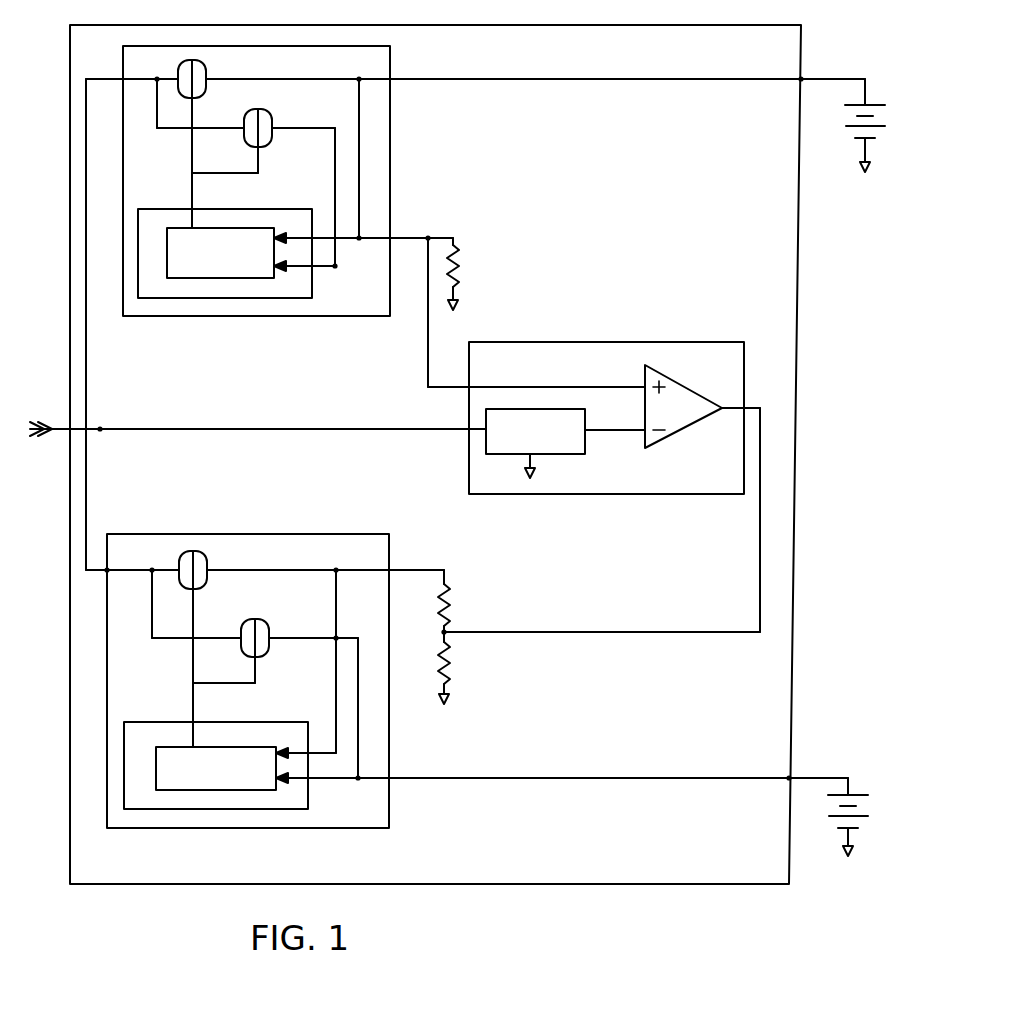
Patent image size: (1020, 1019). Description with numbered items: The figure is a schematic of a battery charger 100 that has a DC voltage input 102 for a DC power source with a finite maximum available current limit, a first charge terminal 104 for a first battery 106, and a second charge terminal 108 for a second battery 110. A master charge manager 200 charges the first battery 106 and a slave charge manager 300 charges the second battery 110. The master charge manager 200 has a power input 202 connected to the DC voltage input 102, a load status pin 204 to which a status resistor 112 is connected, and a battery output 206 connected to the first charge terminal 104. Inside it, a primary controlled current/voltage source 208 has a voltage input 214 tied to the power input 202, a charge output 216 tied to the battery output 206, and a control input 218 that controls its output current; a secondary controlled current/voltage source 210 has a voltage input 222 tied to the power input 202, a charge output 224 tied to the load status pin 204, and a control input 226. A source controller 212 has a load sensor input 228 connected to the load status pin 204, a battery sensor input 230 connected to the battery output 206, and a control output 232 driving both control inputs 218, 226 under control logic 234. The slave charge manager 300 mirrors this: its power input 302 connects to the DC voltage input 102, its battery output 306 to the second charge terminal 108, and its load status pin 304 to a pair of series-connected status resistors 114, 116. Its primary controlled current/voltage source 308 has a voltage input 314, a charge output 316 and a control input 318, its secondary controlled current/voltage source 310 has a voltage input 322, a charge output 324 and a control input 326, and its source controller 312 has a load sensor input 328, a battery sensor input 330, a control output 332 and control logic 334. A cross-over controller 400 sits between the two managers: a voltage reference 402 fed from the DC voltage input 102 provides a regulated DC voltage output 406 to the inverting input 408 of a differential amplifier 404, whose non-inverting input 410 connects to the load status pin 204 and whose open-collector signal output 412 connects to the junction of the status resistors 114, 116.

The battery charger 100 is at (505, 884).
The DC voltage input 102 is at (52, 423).
The first charge terminal 104 is at (803, 81).
The first battery 106 is at (875, 92).
The second charge terminal 108 is at (791, 776).
The second battery 110 is at (859, 782).
The status resistor 112 is at (462, 266).
The status resistor 114 is at (456, 594).
The status resistor 116 is at (457, 666).
The master charge manager 200 is at (390, 152).
The power input 202 is at (124, 78).
The load status pin 204 is at (393, 237).
The battery output 206 is at (395, 76).
The primary controlled current/voltage source 208 is at (205, 66).
The secondary controlled current/voltage source 210 is at (268, 110).
The source controller 212 is at (272, 208).
The voltage input 214 is at (173, 77).
The charge output 216 is at (214, 82).
The control input 218 is at (195, 109).
The voltage input 222 is at (248, 133).
The charge output 224 is at (276, 134).
The control input 226 is at (261, 173).
The load sensor input 228 is at (314, 241).
The battery sensor input 230 is at (314, 268).
The control output 232 is at (197, 204).
The control logic 234 is at (197, 283).
The slave charge manager 300 is at (340, 533).
The power input 302 is at (108, 573).
The load status pin 304 is at (390, 568).
The battery output 306 is at (391, 779).
The primary controlled current/voltage source 308 is at (266, 625).
The secondary controlled current/voltage source 310 is at (205, 558).
The source controller 312 is at (277, 721).
The voltage input 314 is at (238, 636).
The charge output 316 is at (275, 642).
The control input 318 is at (257, 658).
The voltage input 322 is at (176, 568).
The charge output 324 is at (208, 571).
The control input 326 is at (196, 601).
The load sensor input 328 is at (316, 752).
The battery sensor input 330 is at (333, 783).
The control output 332 is at (195, 713).
The control logic 334 is at (203, 791).
The cross-over controller 400 is at (632, 342).
The voltage reference 402 is at (567, 455).
The differential amplifier 404 is at (684, 433).
The regulated DC voltage output 406 is at (588, 428).
The inverting input 408 is at (642, 434).
The non-inverting input 410 is at (641, 385).
The open-collector signal output 412 is at (728, 397).